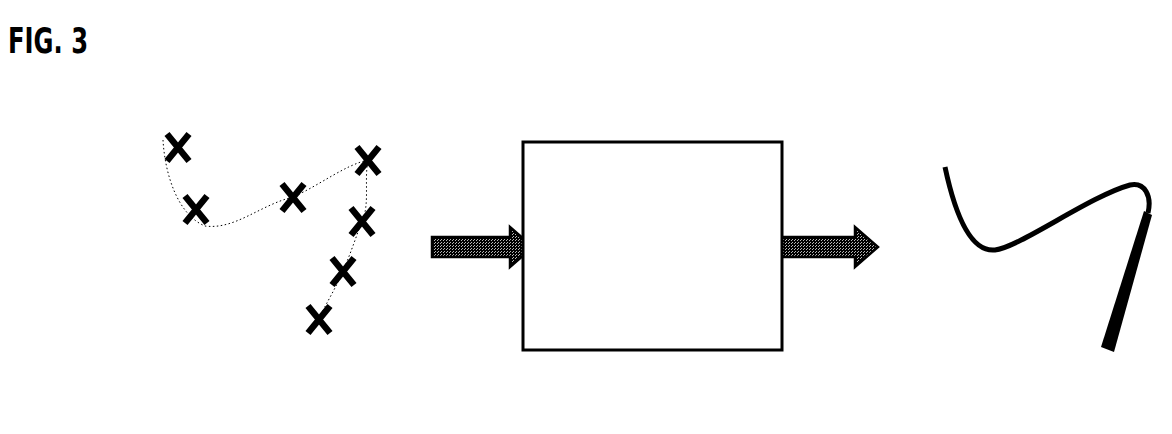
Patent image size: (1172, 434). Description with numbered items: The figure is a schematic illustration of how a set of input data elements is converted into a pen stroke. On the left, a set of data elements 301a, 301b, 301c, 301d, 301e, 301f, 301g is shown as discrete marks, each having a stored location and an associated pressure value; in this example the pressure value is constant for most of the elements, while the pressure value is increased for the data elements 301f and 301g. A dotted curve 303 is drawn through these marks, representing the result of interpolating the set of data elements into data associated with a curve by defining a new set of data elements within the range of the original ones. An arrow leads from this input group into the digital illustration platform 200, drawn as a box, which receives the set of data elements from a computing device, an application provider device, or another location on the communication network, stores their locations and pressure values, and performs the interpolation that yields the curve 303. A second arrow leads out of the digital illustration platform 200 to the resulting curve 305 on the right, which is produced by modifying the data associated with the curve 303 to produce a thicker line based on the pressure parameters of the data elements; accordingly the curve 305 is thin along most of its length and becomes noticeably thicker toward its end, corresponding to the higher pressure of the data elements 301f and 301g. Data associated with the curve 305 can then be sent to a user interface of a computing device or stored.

The data element 301a is at (152, 147).
The data element 301b is at (173, 212).
The data element 301c is at (295, 167).
The data element 301d is at (368, 128).
The data element 301e is at (390, 218).
The data element 301f is at (377, 270).
The data element 301g is at (288, 320).
The curve 303 is at (237, 213).
The digital illustration platform 200 is at (670, 289).
The curve 305 is at (1083, 200).